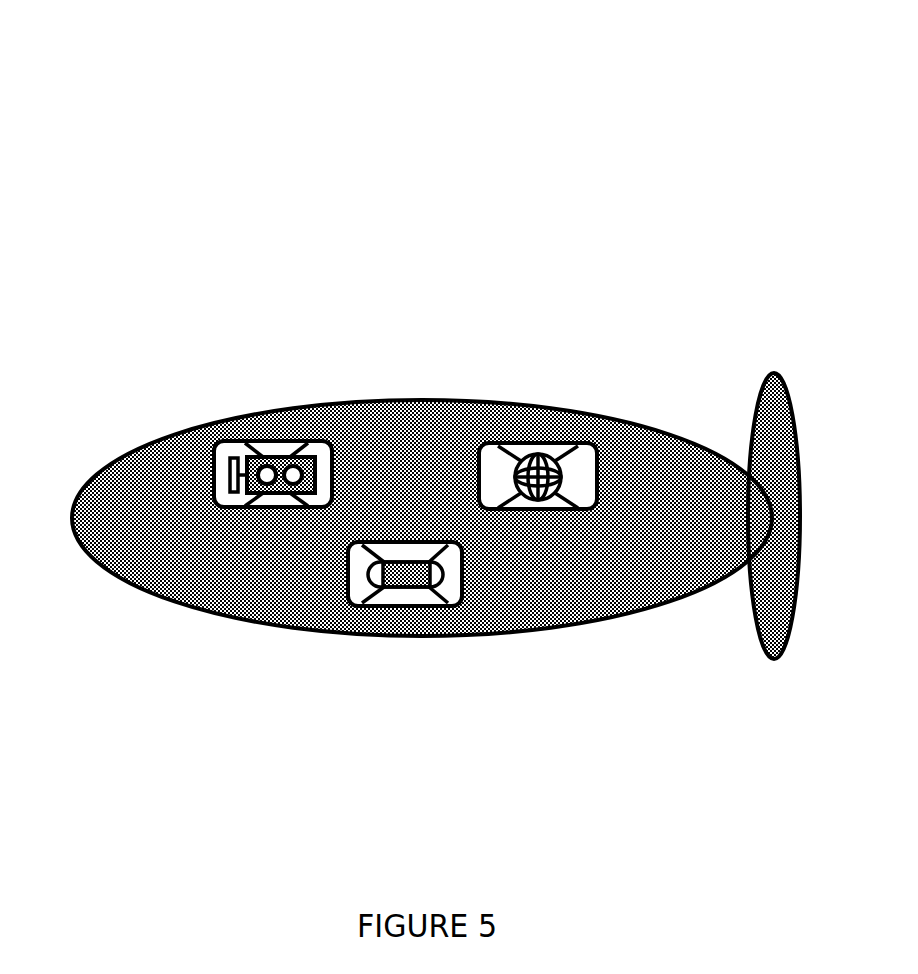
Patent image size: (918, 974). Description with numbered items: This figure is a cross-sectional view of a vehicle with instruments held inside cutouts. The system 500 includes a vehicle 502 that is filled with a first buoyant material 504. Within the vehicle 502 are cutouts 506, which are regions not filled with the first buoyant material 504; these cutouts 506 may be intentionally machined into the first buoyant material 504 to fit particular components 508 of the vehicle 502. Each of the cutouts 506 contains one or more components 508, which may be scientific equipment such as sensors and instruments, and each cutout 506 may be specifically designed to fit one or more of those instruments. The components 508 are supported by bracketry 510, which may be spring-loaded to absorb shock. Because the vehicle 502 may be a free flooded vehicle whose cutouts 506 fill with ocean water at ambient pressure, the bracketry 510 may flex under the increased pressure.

The system 500 is at (418, 393).
The vehicle 502 is at (413, 399).
The first buoyant material 504 is at (667, 507).
The cutouts 506 is at (270, 495).
The components 508 is at (410, 573).
The bracketry 510 is at (258, 505).